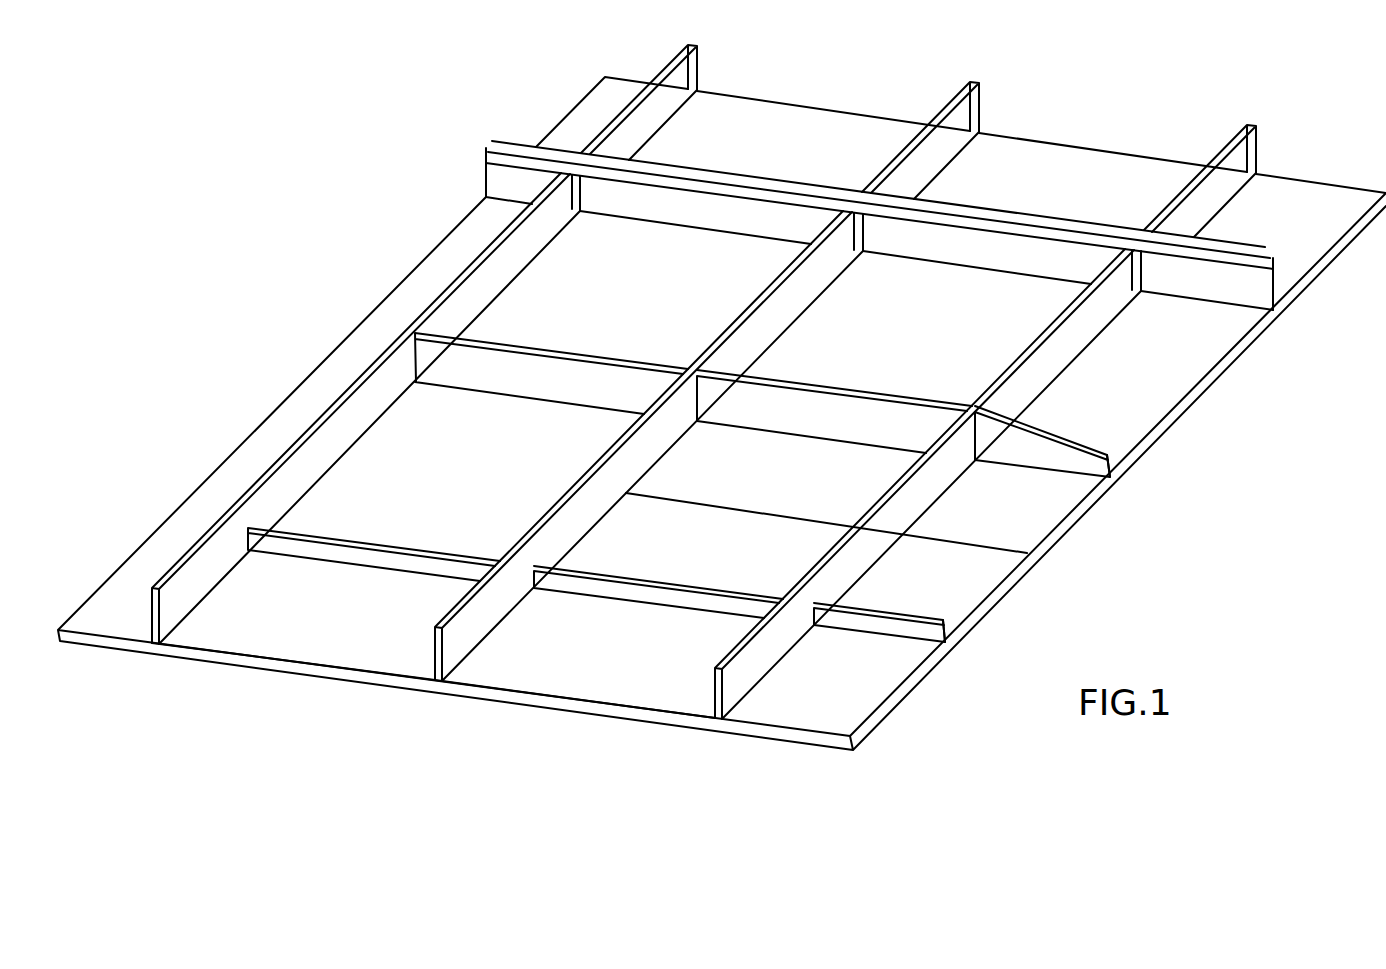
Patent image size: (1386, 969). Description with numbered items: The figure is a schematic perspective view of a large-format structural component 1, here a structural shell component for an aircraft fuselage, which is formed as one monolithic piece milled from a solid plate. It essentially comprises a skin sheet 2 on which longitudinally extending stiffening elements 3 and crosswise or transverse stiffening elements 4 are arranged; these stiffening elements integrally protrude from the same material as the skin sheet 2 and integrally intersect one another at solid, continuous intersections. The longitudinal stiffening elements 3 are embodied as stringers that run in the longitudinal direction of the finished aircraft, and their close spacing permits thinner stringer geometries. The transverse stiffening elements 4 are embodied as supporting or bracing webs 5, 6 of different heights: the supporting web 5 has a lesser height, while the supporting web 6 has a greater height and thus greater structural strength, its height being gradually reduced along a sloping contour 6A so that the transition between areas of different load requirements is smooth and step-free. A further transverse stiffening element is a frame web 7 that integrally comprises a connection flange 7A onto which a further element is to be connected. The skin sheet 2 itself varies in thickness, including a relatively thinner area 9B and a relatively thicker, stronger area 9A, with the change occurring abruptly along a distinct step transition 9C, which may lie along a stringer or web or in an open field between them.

The structural component 1 is at (252, 263).
The skin sheet 2 is at (222, 483).
The longitudinally extending stiffening elements 3 is at (172, 612).
The transverse stiffening elements 4 is at (1253, 290).
The supporting web 5 is at (880, 622).
The supporting web 6 is at (766, 431).
The sloping contour 6A is at (1060, 430).
The frame web 7 is at (856, 202).
The connection flange 7A is at (494, 141).
The thicker area 9A is at (558, 700).
The thinner area 9B is at (275, 663).
The step transition 9C is at (438, 687).